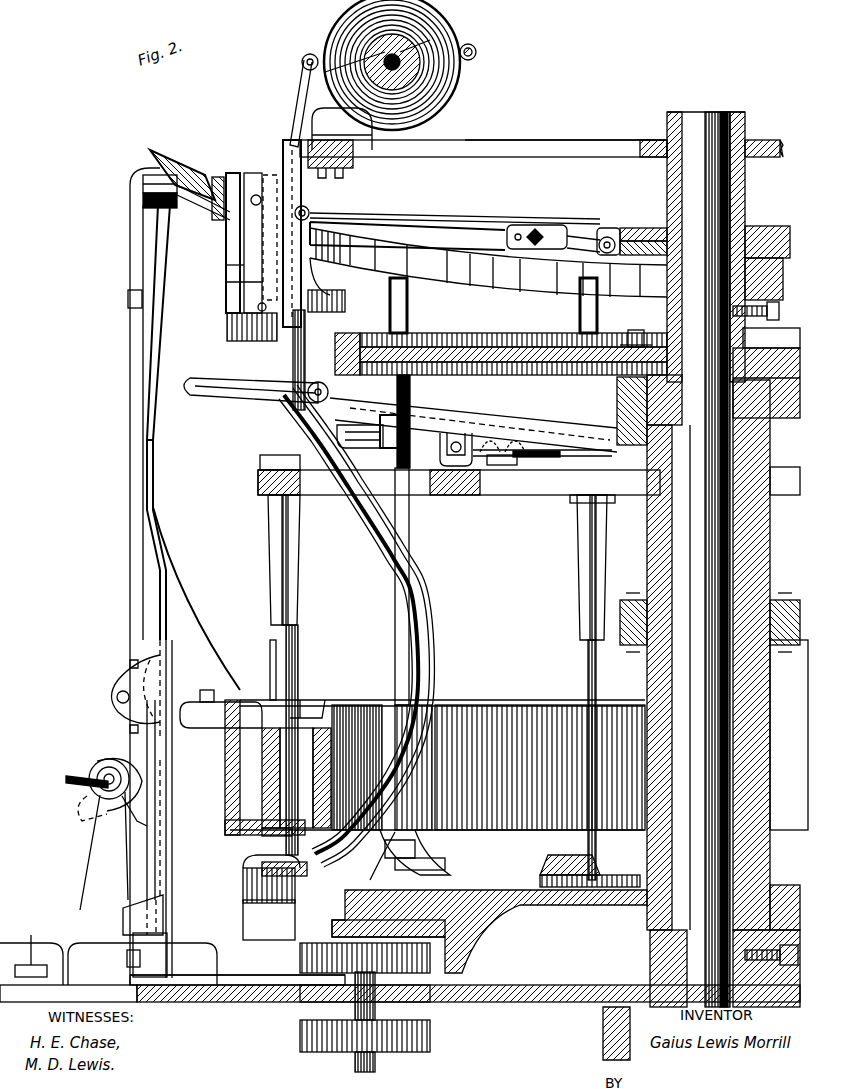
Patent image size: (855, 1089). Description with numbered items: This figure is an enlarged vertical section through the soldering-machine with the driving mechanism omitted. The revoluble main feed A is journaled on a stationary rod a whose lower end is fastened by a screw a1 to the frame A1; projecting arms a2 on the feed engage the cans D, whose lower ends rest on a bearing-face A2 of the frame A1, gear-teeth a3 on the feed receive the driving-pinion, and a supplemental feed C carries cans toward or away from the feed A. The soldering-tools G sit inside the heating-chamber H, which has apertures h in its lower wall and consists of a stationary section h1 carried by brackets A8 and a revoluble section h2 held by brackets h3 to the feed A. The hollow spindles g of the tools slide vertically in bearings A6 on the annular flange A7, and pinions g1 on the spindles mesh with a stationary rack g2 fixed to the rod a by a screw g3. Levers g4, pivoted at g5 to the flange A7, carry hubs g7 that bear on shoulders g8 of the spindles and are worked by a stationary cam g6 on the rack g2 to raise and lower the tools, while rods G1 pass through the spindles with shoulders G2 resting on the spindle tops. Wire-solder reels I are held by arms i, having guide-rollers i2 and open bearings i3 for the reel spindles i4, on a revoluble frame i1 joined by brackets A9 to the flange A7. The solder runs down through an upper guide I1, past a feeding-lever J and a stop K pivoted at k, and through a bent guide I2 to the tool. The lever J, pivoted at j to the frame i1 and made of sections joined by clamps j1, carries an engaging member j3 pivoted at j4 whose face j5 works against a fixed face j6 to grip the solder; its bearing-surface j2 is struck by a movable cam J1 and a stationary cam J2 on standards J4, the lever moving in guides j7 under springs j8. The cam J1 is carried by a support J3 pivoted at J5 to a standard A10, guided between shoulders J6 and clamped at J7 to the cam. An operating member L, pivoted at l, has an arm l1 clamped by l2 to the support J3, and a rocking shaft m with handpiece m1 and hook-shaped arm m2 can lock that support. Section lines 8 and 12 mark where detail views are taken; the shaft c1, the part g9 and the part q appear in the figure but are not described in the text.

The main feed A is at (650, 575).
The frame A1 is at (520, 1006).
The bearing-face A2 is at (270, 1006).
The bearings A6 is at (300, 560).
The frame or annular flange A7 is at (258, 486).
The brackets A8 is at (345, 172).
The brackets A9 is at (226, 244).
The standard A10 is at (172, 838).
The stationary rod or bar a is at (732, 590).
The screw a1 is at (771, 965).
The projecting arms a2 is at (243, 920).
The gear-teeth a3 is at (388, 930).
The supplemental feed C is at (318, 956).
The gear shaft c1 is at (375, 1066).
The cans or other articles D is at (243, 887).
The soldering-tools G is at (270, 780).
The rods G1 is at (407, 328).
The shoulders G2 is at (407, 300).
The spindles g is at (290, 662).
The pinions g1 is at (345, 310).
The stationary gear or rack g2 is at (320, 383).
The screw g3 is at (779, 311).
The levers g4 is at (435, 414).
The pivot g5 is at (470, 436).
The stationary cam g6 is at (634, 470).
The hubs g7 is at (295, 412).
The shoulders g8 is at (272, 388).
The bolt g9 is at (636, 330).
The heating-chamber H is at (252, 700).
The apertures h is at (262, 830).
The stationary section h1 is at (226, 792).
The revoluble section h2 is at (308, 706).
The brackets h3 is at (436, 855).
The reels I is at (455, 95).
The upper guide I1 is at (292, 160).
The bent guide I2 is at (437, 658).
The arms i is at (415, 126).
The revoluble frame i1 is at (472, 146).
The guide-rollers i2 is at (302, 62).
The open bearings i3 is at (380, 58).
The spindles i4 is at (420, 50).
The section line 12 is at (290, 224).
The feeding-levers J is at (434, 222).
The movable cam J1 is at (166, 258).
The stationary cam J2 is at (188, 152).
The movable support J3 is at (147, 356).
The stationary standards J4 is at (130, 418).
The pivot J5 is at (117, 695).
The shoulders J6 is at (126, 912).
The clamp J7 is at (128, 300).
The pivot j is at (609, 236).
The clamps j1 is at (535, 230).
The bearing-surfaces j2 is at (143, 200).
The engaging members j3 is at (200, 212).
The pivot j4 is at (228, 190).
The engaging faces j5 is at (265, 237).
The fixed engaging faces j6 is at (323, 276).
The guides j7 is at (226, 265).
The springs j8 is at (226, 282).
The stop K is at (251, 239).
The pivot k is at (304, 211).
The link q is at (336, 214).
The section line 8 is at (227, 327).
The operating member L is at (70, 945).
The pivot l is at (64, 888).
The laterally-extending arm l1 is at (133, 942).
The clamp l2 is at (127, 957).
The rocking shaft m is at (100, 772).
The handpiece m1 is at (67, 778).
The hook-shaped arm m2 is at (110, 760).